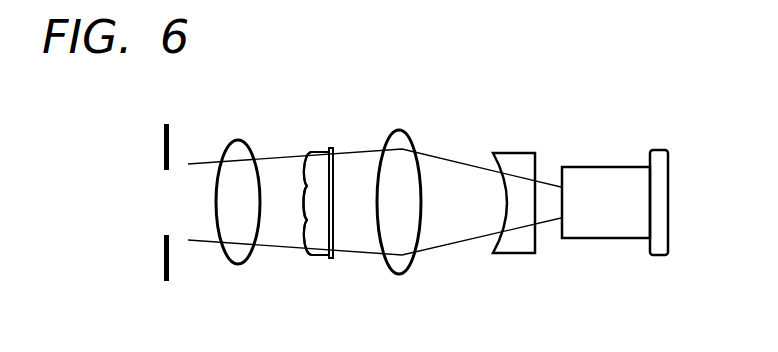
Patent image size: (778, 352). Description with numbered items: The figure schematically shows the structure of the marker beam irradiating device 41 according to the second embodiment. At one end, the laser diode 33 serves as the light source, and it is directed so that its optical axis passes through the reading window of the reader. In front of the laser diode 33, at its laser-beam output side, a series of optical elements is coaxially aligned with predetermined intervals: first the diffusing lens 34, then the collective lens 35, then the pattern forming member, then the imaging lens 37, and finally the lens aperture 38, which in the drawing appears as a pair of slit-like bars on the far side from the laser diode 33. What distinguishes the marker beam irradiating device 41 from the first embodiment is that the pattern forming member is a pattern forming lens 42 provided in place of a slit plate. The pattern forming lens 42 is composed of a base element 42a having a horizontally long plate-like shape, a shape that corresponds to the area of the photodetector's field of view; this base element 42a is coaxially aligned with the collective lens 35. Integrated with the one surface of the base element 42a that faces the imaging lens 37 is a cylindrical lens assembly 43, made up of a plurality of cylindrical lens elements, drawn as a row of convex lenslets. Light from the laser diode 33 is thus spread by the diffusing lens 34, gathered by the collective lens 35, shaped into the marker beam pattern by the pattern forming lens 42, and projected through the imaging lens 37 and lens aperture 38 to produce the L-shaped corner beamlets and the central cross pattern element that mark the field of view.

The laser diode 33 is at (608, 241).
The diffusing lens 34 is at (514, 256).
The collective lens 35 is at (398, 276).
The imaging lens 37 is at (238, 141).
The lens aperture 38 is at (171, 147).
The marker beam irradiating device 41 is at (490, 126).
The pattern forming lens 42 is at (321, 141).
The base element 42a is at (331, 148).
The cylindrical lens assembly 43 is at (307, 257).